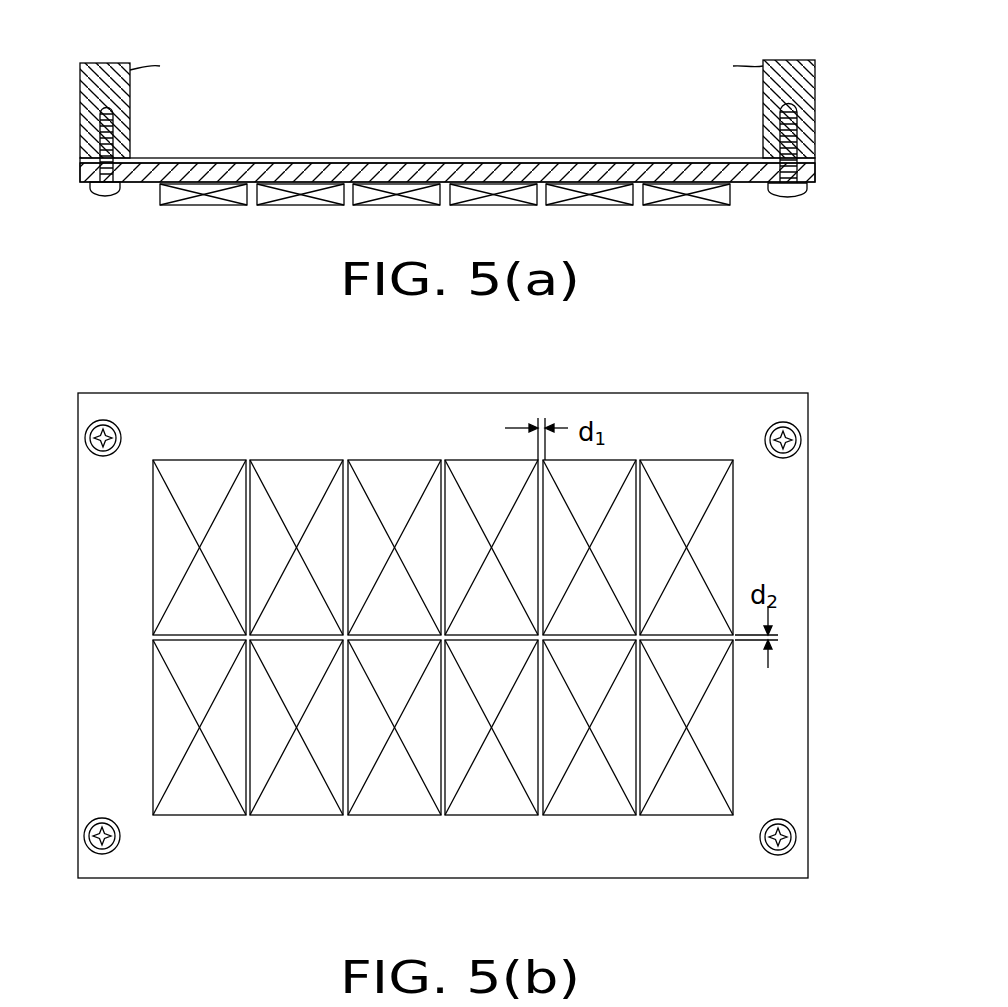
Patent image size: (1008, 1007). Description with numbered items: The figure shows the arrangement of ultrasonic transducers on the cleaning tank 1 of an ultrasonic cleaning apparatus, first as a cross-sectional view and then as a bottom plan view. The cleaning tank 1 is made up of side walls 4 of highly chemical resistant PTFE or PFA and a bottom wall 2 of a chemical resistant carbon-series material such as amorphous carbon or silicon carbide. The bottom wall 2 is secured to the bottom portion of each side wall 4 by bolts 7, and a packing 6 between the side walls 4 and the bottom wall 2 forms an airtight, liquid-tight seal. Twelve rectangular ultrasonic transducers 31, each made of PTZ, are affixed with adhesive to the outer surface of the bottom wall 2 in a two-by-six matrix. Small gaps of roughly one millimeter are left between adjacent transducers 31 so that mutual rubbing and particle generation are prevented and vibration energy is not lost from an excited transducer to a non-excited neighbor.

In FIG. 5A, the cleaning tank 1 is at (490, 138).
In FIG. 5A, the bottom wall 2 is at (599, 165).
In FIG. 5B, the bottom wall 2 is at (790, 653).
In FIG. 5A, the side wall 4 is at (808, 88).
In FIG. 5A, the packing 6 is at (815, 160).
In FIG. 5A, the bolt 7 is at (796, 195).
In FIG. 5B, the bolt 7 is at (85, 437).
In FIG. 5A, the ultrasonic transducer 31 is at (615, 197).
In FIG. 5B, the ultrasonic transducer 31 is at (202, 478).